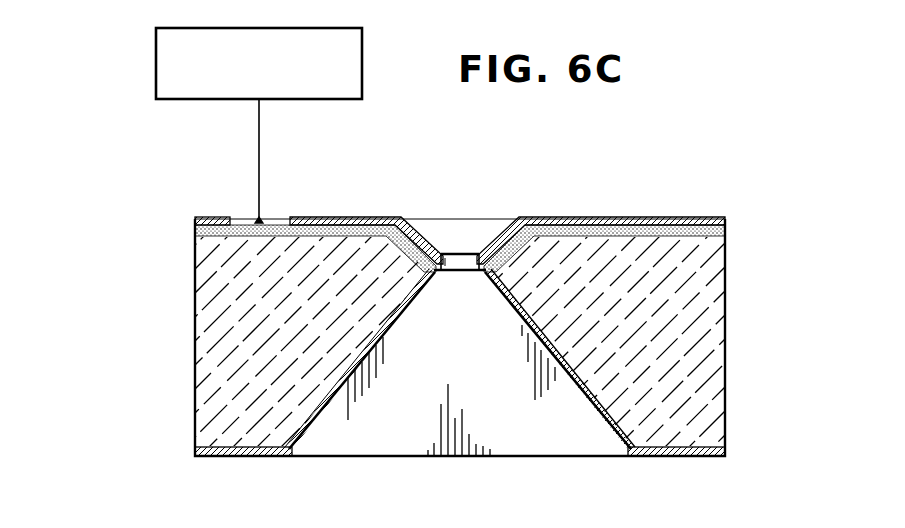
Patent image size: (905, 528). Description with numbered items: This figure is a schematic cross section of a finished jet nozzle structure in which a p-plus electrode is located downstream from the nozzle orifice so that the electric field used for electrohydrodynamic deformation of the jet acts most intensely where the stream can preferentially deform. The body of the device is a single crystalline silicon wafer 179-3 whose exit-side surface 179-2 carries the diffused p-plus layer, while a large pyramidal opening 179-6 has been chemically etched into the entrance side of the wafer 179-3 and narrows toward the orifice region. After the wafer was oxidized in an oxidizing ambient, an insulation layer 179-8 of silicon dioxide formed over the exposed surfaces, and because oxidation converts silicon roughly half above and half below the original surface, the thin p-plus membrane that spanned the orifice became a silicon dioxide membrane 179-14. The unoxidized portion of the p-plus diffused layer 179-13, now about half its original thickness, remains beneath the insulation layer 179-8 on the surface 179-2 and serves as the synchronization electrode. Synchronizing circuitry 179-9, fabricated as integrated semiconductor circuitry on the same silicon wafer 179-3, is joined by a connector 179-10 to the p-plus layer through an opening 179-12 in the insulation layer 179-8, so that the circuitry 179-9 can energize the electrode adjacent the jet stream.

The synchronizing circuitry 179-9 is at (156, 66).
The connector 179-10 is at (259, 140).
The opening in insulation layer 179-12 is at (279, 220).
The unoxidized portion of p+ diffused layer 179-13 is at (330, 228).
The silicon dioxide membrane 179-14 is at (436, 272).
The insulation layer 179-8 is at (528, 221).
The surface of silicon wafer 179-2 is at (630, 221).
The single crystalline silicon wafer 179-3 is at (708, 368).
The pyramidal opening 179-6 is at (540, 453).